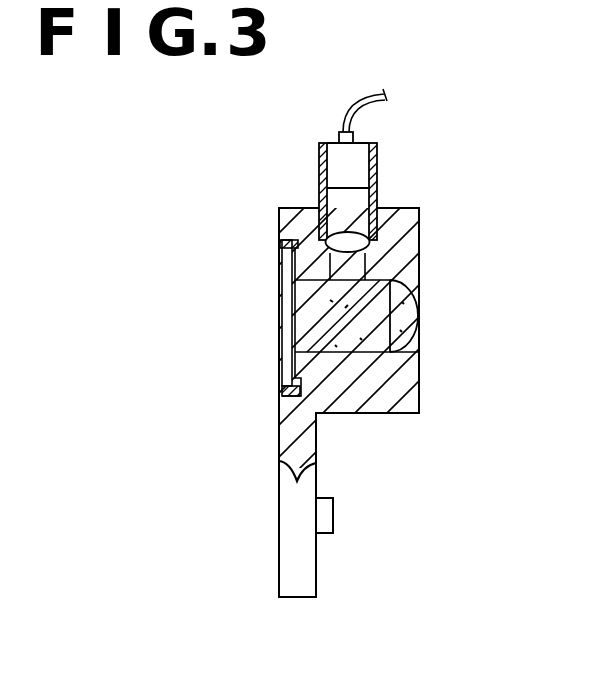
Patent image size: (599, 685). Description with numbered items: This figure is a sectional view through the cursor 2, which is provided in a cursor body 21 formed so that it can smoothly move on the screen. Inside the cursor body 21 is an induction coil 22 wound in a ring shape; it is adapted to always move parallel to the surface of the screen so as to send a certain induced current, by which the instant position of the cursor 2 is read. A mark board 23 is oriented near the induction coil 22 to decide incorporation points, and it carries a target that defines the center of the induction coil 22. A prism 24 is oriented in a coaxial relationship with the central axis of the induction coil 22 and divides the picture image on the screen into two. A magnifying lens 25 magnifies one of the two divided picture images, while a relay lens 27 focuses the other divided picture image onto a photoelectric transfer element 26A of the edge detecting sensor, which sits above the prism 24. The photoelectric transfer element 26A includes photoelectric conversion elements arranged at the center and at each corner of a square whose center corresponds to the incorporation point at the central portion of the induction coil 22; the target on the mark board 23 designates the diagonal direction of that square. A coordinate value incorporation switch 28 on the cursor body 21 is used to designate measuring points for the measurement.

The cursor 2 is at (290, 578).
The cursor body 21 is at (289, 492).
The induction coil 22 is at (280, 219).
The mark board 23 is at (290, 277).
The prism 24 is at (376, 340).
The magnifying lens 25 is at (407, 319).
The photoelectric transfer element 26A is at (358, 163).
The relay lens 27 is at (343, 236).
The coordinate value incorporation switch 28 is at (331, 519).